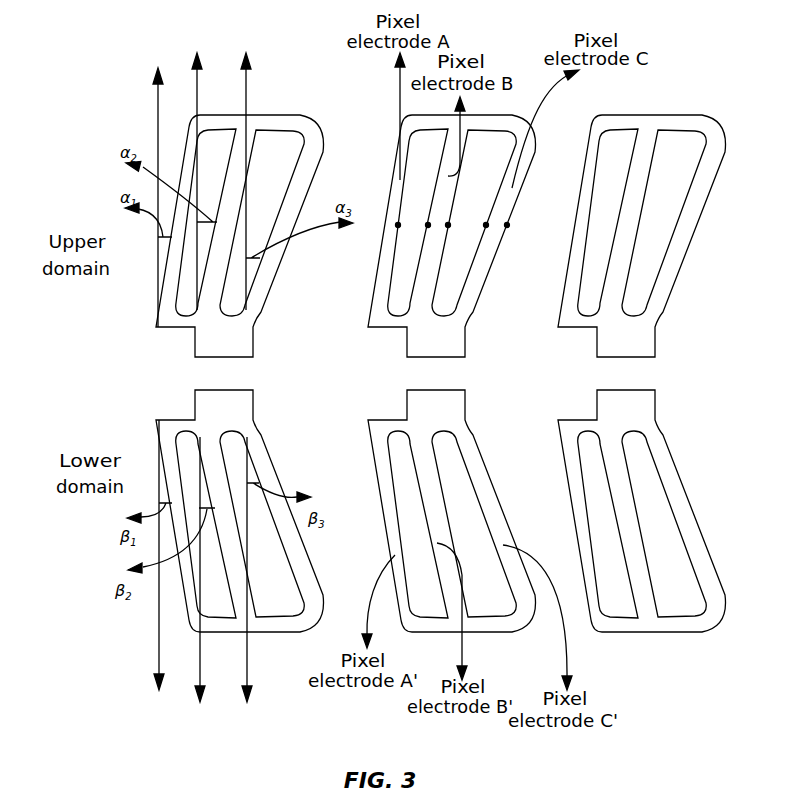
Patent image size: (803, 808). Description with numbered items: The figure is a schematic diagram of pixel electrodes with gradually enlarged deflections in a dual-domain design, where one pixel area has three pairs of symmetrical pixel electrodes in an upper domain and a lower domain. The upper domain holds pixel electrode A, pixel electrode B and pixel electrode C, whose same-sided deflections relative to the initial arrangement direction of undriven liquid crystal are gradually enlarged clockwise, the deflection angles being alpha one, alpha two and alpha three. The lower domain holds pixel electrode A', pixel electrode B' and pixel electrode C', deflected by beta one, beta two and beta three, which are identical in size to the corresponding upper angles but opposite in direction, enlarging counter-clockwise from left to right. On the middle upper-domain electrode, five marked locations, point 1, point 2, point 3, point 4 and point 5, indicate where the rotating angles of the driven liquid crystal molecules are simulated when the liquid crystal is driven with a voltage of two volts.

The point 1 is at (514, 230).
The point 2 is at (490, 234).
The point 3 is at (457, 218).
The point 4 is at (432, 234).
The point 5 is at (406, 217).